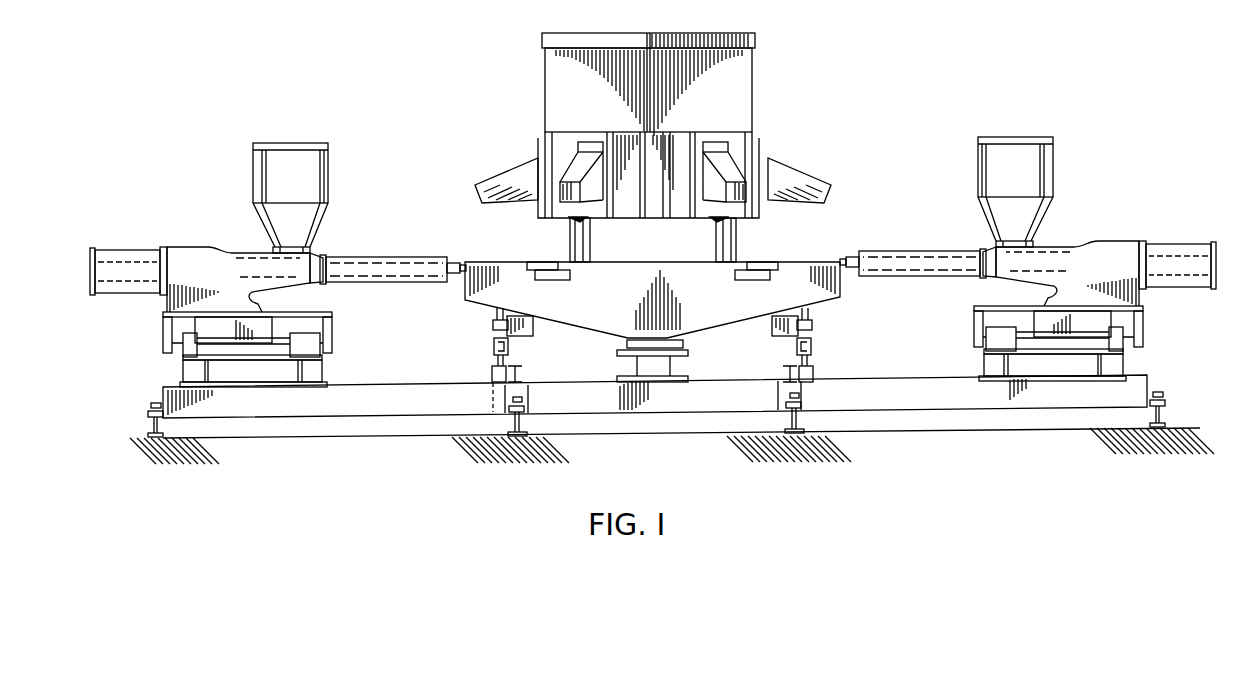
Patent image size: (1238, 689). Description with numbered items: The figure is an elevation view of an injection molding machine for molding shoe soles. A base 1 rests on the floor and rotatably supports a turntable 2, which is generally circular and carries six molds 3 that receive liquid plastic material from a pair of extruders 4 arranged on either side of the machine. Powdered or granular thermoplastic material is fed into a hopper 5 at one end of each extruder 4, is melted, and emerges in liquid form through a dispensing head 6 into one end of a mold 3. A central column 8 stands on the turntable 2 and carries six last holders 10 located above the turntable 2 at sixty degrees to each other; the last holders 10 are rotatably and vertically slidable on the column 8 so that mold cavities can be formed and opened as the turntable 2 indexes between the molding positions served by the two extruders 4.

The base 1 is at (707, 402).
The turntable 2 is at (722, 318).
The mold 3 is at (545, 272).
The extruder 4 is at (205, 262).
The hopper 5 is at (320, 172).
The dispensing head 6 is at (460, 265).
The central column 8 is at (741, 90).
The last holder 10 is at (500, 178).